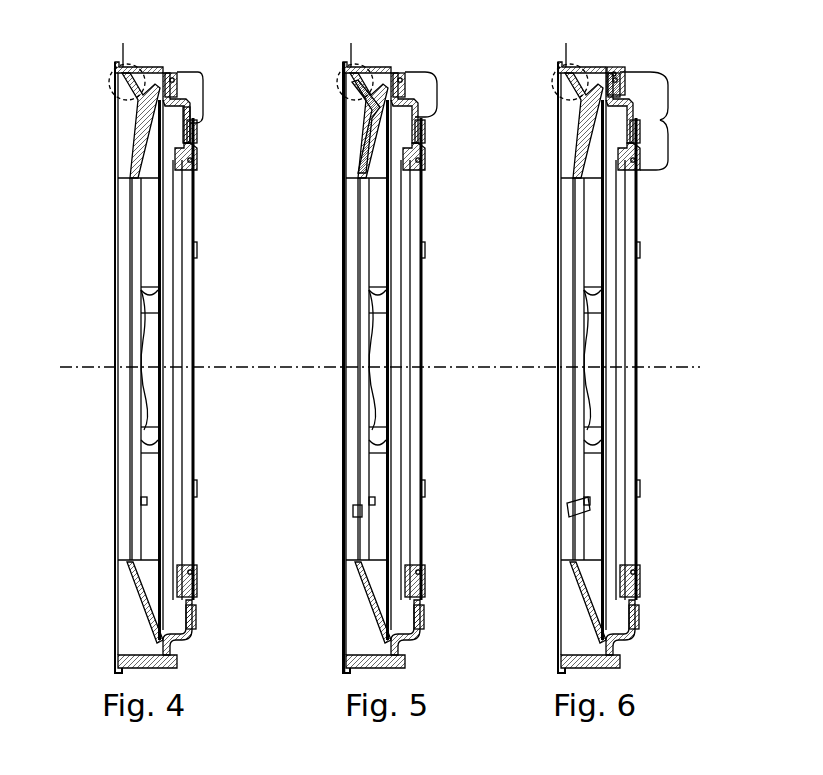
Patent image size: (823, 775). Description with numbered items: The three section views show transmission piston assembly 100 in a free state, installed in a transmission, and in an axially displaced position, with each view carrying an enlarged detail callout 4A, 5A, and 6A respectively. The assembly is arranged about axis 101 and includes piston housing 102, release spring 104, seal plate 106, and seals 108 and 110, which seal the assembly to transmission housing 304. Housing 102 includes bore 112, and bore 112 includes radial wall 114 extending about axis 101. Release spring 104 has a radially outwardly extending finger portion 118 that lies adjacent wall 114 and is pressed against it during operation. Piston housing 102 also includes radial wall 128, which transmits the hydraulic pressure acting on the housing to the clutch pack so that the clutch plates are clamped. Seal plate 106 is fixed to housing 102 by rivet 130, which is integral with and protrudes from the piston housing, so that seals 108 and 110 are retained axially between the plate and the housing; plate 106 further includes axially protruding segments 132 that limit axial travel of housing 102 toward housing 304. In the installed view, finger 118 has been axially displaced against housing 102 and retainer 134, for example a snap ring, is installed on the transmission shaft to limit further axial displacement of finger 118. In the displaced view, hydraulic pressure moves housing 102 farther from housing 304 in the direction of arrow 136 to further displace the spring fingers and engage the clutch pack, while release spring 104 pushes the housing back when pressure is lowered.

In FIG. 4, the transmission piston assembly 100 is at (157, 342).
In FIG. 4, the axis 101 is at (227, 367).
In FIG. 4, the piston housing 102 is at (163, 177).
In FIG. 4, the release spring 104 is at (130, 153).
In FIG. 4, the seal plate 106 is at (197, 103).
In FIG. 4, the seal 108 is at (198, 165).
In FIG. 4, the seal 110 is at (177, 80).
In FIG. 4, the bore 112 is at (118, 101).
In FIG. 4, the radial wall 114 is at (152, 72).
In FIG. 4, the finger portion 118 is at (137, 103).
In FIG. 4, the radial wall 128 is at (115, 67).
In FIG. 4, the rivet 130 is at (198, 127).
In FIG. 4, the axially protruding segments 132 is at (198, 147).
In FIG. 5, the retainer 134 is at (360, 173).
In FIG. 6, the arrow 136 is at (633, 91).
In FIG. 5, the housing 304 is at (437, 105).
In FIG. 6, the housing 304 is at (670, 107).
In FIG. 4, the detail view callout 4A is at (112, 65).
In FIG. 5, the detail view callout 5A is at (340, 66).
In FIG. 6, the detail view callout 6A is at (555, 66).